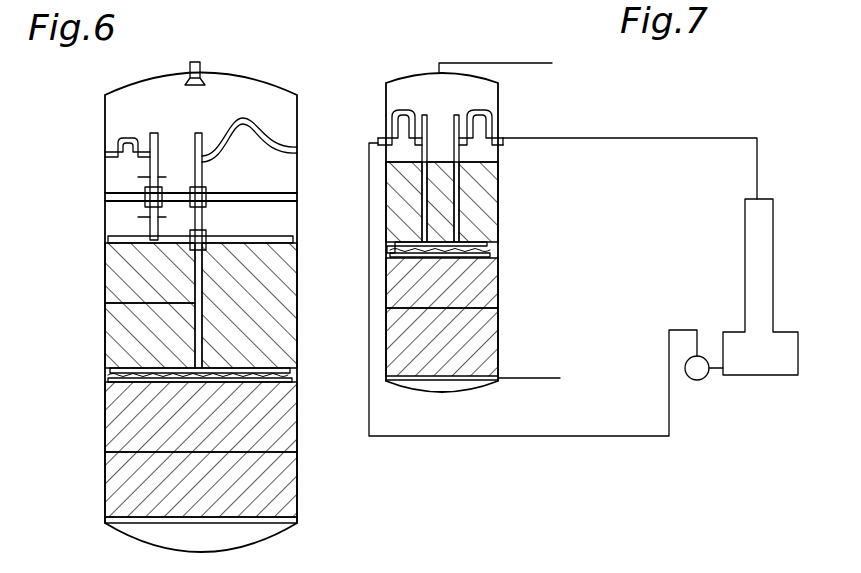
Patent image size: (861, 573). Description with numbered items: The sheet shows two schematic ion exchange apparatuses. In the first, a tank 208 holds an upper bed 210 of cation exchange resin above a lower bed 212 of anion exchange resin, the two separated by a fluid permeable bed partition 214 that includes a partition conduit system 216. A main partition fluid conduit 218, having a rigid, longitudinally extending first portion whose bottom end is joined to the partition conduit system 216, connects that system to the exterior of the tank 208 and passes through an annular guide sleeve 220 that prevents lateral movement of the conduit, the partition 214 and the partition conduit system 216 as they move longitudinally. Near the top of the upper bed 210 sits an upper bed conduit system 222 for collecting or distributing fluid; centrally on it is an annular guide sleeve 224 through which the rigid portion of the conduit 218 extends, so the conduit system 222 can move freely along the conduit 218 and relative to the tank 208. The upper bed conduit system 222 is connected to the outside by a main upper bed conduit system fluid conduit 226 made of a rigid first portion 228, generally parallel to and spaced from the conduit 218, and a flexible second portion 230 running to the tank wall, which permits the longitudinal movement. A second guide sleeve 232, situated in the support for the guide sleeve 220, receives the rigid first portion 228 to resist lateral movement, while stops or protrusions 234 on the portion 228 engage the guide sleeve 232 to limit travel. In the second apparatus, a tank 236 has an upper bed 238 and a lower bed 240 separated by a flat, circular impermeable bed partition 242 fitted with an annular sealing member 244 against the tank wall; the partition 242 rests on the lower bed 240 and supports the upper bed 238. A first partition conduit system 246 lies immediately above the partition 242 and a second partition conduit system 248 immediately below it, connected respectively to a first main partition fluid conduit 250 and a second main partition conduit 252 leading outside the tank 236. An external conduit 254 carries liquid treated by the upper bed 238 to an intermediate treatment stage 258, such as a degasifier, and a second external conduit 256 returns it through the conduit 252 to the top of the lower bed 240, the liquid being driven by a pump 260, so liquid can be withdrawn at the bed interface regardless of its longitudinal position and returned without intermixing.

In FIG. 6, the tank 208 is at (105, 355).
In FIG. 6, the upper bed 210 is at (132, 335).
In FIG. 6, the lower bed 212 is at (187, 478).
In FIG. 6, the fluid permeable bed partition 214 is at (201, 417).
In FIG. 6, the partition conduit system 216 is at (285, 368).
In FIG. 6, the main partition fluid conduit 218 is at (203, 323).
In FIG. 6, the annular guide sleeve 220 is at (208, 192).
In FIG. 6, the upper bed conduit system 222 is at (272, 238).
In FIG. 6, the annular guide sleeve 224 is at (210, 258).
In FIG. 6, the main upper bed conduit system fluid conduit 226 is at (166, 138).
In FIG. 6, the rigid first portion 228 is at (150, 273).
In FIG. 6, the flexible second portion 230 is at (115, 133).
In FIG. 6, the second guide sleeve 232 is at (150, 204).
In FIG. 6, the stops or protrusions 234 is at (138, 177).
In FIG. 7, the tank 236 is at (500, 248).
In FIG. 7, the upper bed 238 is at (395, 186).
In FIG. 7, the lower bed 240 is at (422, 347).
In FIG. 7, the impermeable bed partition 242 is at (486, 258).
In FIG. 7, the annular sealing member 244 is at (389, 256).
In FIG. 7, the first partition conduit system 246 is at (482, 240).
In FIG. 7, the second partition conduit system 248 is at (442, 283).
In FIG. 7, the first main partition fluid conduit 250 is at (463, 200).
In FIG. 7, the second main partition conduit 252 is at (415, 218).
In FIG. 7, the external conduit 254 is at (603, 142).
In FIG. 7, the second external conduit 256 is at (408, 437).
In FIG. 7, the intermediate treatment stage 258 is at (767, 238).
In FIG. 7, the pump 260 is at (700, 380).